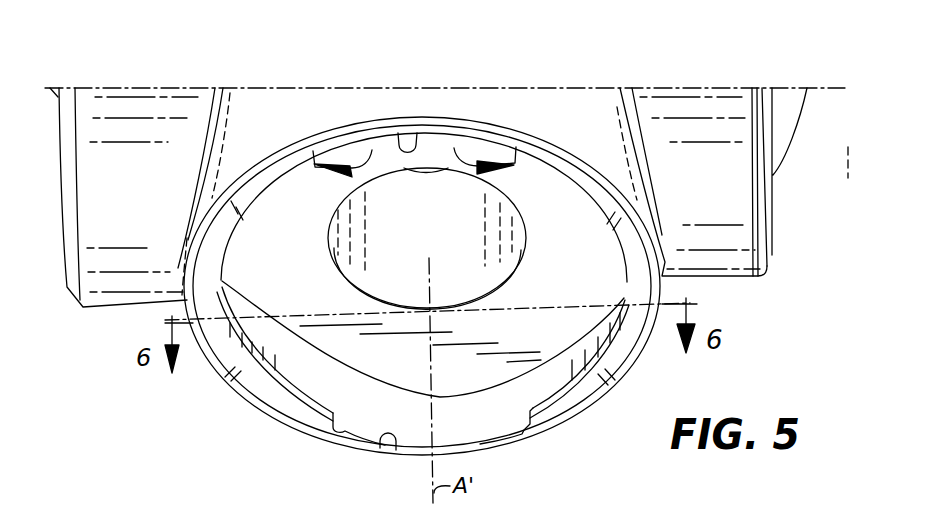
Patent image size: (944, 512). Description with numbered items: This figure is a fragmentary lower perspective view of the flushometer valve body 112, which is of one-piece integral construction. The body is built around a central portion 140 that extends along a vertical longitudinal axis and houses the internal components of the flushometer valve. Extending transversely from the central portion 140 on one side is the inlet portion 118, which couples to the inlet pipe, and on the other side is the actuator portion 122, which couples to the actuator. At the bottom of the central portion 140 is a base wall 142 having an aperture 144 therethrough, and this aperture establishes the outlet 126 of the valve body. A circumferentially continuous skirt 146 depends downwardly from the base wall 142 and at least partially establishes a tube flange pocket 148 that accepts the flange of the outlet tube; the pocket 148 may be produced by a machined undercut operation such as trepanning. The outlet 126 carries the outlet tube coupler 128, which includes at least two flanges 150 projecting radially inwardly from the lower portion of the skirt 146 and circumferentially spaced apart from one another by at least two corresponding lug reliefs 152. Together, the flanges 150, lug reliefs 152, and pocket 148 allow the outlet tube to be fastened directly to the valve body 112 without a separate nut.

The flushometer valve body 112 is at (138, 55).
The inlet portion 118 is at (55, 316).
The actuator portion 122 is at (781, 303).
The outlet 126 is at (331, 308).
The outlet tube coupler 128 is at (279, 450).
The central portion 140 is at (578, 133).
The base wall 142 is at (569, 341).
The aperture 144 is at (522, 256).
The skirt 146 is at (358, 424).
The tube flange pocket 148 is at (500, 427).
The flanges 150 is at (372, 152).
The lug reliefs 152 is at (418, 140).